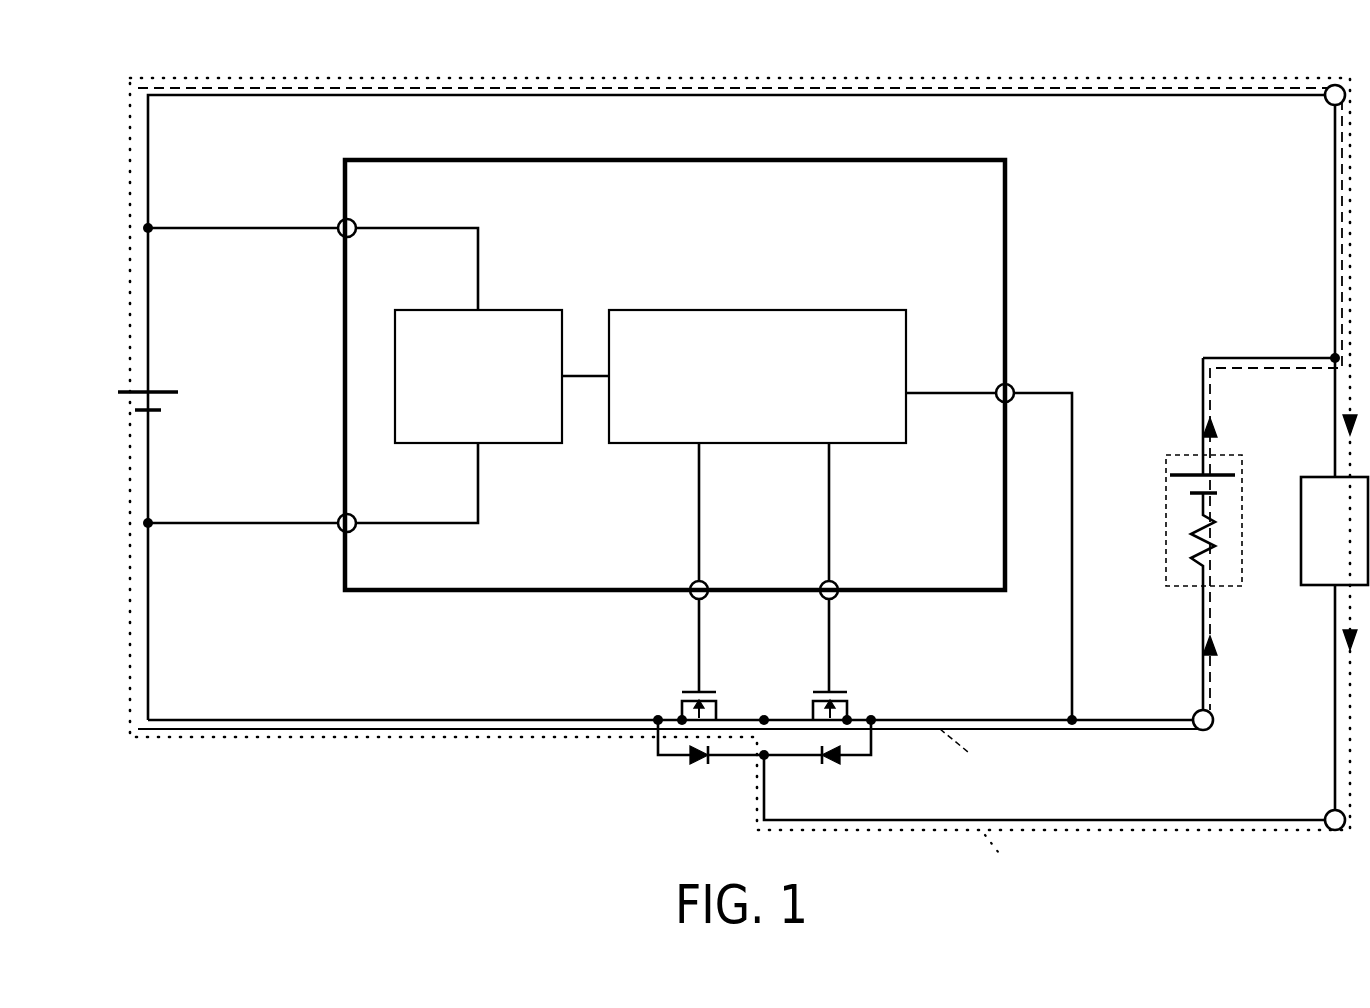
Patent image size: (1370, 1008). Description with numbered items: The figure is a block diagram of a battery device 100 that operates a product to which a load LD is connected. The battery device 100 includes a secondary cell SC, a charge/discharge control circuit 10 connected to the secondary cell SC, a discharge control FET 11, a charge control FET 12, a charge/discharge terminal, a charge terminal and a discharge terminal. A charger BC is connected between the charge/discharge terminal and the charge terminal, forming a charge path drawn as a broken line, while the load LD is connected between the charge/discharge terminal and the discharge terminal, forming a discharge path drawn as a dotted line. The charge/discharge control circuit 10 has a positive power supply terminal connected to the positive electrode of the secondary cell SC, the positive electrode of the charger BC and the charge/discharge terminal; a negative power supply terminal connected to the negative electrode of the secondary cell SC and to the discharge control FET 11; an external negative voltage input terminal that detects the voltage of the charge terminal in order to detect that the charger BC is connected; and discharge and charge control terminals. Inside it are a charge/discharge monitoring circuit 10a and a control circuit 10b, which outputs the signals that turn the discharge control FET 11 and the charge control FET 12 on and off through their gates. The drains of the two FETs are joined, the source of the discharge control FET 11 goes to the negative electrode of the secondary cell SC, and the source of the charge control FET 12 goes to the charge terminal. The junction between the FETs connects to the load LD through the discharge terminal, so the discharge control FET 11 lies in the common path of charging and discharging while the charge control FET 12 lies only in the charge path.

The battery device 100 is at (207, 30).
The charge/discharge control circuit 10 is at (915, 160).
The charge/discharge monitoring circuit 10a is at (505, 443).
The control circuit 10b is at (852, 443).
The discharge control FET 11 is at (683, 715).
The charge control FET 12 is at (814, 715).
The secondary cell SC is at (130, 390).
The charger BC is at (1178, 455).
The load LD is at (1325, 477).